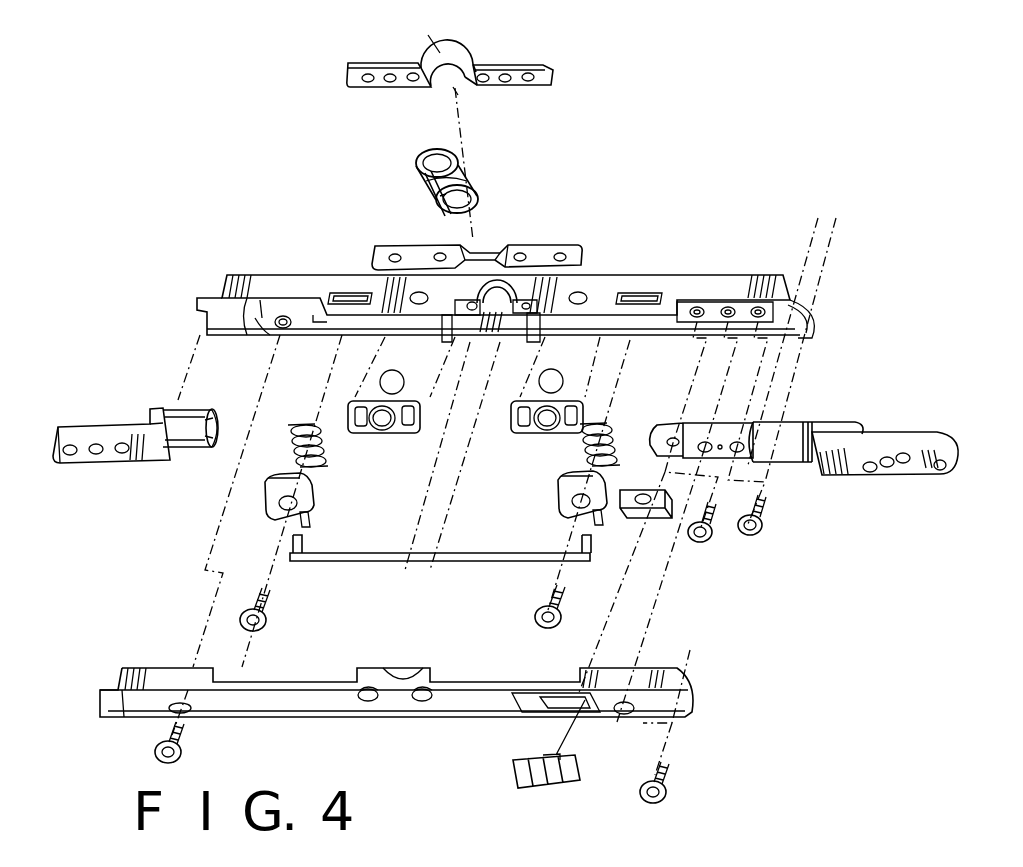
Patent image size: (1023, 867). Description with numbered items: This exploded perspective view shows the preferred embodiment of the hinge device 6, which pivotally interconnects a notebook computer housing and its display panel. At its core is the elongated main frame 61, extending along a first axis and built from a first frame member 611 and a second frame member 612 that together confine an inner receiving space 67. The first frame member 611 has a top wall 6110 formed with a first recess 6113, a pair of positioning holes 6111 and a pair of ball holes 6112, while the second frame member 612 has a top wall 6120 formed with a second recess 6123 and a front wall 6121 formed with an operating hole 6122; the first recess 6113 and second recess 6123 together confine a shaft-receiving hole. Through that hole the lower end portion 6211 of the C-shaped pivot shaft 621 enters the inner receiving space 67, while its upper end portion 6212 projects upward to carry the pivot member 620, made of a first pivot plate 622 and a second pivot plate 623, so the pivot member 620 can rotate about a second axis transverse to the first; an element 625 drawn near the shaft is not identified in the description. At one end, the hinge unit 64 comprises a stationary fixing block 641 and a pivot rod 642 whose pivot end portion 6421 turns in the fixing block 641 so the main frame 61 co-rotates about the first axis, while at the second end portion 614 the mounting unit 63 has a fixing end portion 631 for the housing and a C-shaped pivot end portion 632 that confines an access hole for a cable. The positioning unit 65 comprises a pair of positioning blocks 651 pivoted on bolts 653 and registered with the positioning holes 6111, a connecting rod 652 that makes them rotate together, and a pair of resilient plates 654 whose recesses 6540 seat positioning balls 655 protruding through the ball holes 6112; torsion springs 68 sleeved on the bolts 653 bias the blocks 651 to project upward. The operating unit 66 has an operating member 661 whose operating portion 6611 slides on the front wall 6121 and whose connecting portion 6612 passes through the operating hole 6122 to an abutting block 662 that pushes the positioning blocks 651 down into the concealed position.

The hinge device 6 is at (934, 218).
The elongated main frame 61 is at (193, 278).
The first frame member 611 is at (243, 277).
The top wall 6110 is at (795, 300).
The positioning holes 6111 is at (753, 277).
The ball holes 6112 is at (262, 313).
The first recess 6113 is at (540, 282).
The second frame member 612 is at (150, 668).
The top wall 6120 is at (147, 677).
The front wall 6121 is at (290, 698).
The operating hole 6122 is at (558, 706).
The second recess 6123 is at (397, 690).
The second end portion 614 is at (798, 310).
The pivot member 620 is at (340, 207).
The pivot shaft 621 is at (470, 176).
The lower end portion 6211 is at (472, 213).
The upper end portion 6212 is at (460, 156).
The first pivot plate 622 is at (347, 70).
The second pivot plate 623 is at (412, 253).
The slot of sleeve 625 is at (428, 195).
The mounting unit 63 is at (108, 397).
The fixing end portion 631 is at (105, 458).
The pivot end portion 632 is at (185, 432).
The hinge unit 64 is at (892, 405).
The stationary fixing block 641 is at (900, 470).
The pivot rod 642 is at (742, 425).
The pivot end portion 6421 is at (703, 433).
The positioning unit 65 is at (419, 577).
The positioning blocks 651 is at (282, 500).
The connecting rod 652 is at (432, 555).
The bolt 653 is at (266, 600).
The resilient plates 654 is at (356, 434).
The recess 6540 is at (384, 428).
The positioning balls 655 is at (395, 383).
The operating unit 66 is at (735, 600).
The operating member 661 is at (616, 813).
The operating portion 6611 is at (520, 785).
The connecting portion 6612 is at (558, 756).
The abutting block 662 is at (660, 505).
The inner receiving space 67 is at (260, 313).
The torsion springs 68 is at (302, 422).